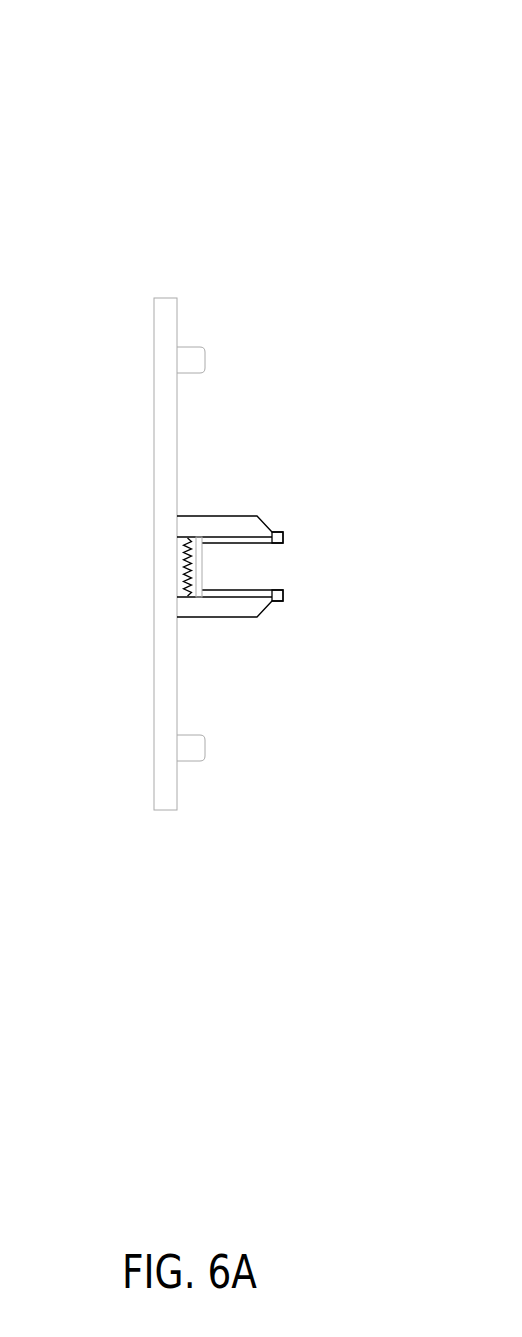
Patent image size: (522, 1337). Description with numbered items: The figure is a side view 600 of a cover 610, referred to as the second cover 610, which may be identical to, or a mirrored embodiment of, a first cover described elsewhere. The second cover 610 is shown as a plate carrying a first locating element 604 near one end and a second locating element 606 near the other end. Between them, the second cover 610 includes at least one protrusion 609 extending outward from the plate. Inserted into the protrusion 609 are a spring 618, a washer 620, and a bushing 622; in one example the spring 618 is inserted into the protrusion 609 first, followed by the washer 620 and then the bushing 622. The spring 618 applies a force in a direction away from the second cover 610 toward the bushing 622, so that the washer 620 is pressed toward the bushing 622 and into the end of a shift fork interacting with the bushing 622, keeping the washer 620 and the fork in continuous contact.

The side view 600 is at (296, 95).
The first locating element 604 is at (209, 342).
The second locating element 606 is at (209, 757).
The protrusion 609 is at (207, 619).
The cover 610 is at (175, 811).
The spring 618 is at (185, 556).
The washer 620 is at (203, 540).
The bushing 622 is at (279, 597).